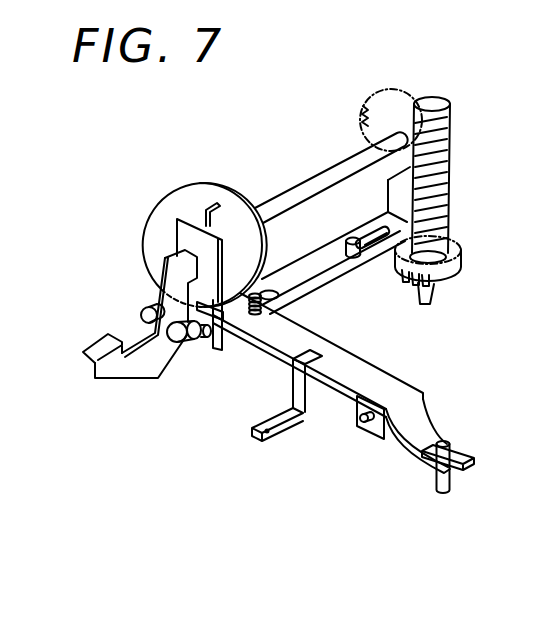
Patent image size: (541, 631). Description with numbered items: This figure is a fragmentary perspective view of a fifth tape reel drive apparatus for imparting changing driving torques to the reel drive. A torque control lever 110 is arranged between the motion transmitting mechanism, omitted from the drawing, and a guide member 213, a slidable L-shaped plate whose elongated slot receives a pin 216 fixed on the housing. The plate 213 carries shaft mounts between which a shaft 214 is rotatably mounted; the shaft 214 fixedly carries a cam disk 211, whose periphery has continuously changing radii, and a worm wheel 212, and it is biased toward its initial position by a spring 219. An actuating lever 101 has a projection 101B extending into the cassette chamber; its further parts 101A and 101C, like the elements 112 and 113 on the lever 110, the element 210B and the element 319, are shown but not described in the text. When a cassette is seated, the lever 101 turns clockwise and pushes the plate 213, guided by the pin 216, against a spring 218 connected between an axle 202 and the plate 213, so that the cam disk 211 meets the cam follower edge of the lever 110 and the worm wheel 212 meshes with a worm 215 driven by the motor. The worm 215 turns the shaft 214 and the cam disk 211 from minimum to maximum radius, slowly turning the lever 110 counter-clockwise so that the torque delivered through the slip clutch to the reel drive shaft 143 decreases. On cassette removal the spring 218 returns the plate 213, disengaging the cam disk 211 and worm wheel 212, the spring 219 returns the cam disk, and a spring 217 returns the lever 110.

The worm wheel 212 is at (383, 110).
The shaft 214 is at (323, 166).
The guide member 213 is at (177, 233).
The cam disk 211 is at (190, 192).
The spring 219 is at (215, 203).
The lever upper arm 101A is at (178, 272).
The actuating lever 101 is at (153, 288).
The lever tab 101C is at (103, 344).
The projection 101B is at (138, 372).
The axle 202 is at (180, 345).
The spring 218 is at (203, 340).
The pin 216 is at (355, 257).
The worm 215 is at (438, 288).
The spring 217 is at (268, 300).
The member 319 is at (528, 332).
The torque control lever 110 is at (391, 388).
The reel drive shaft 143 is at (444, 442).
The arm 210B is at (473, 457).
The bracket 112 is at (288, 421).
The block 113 is at (362, 428).